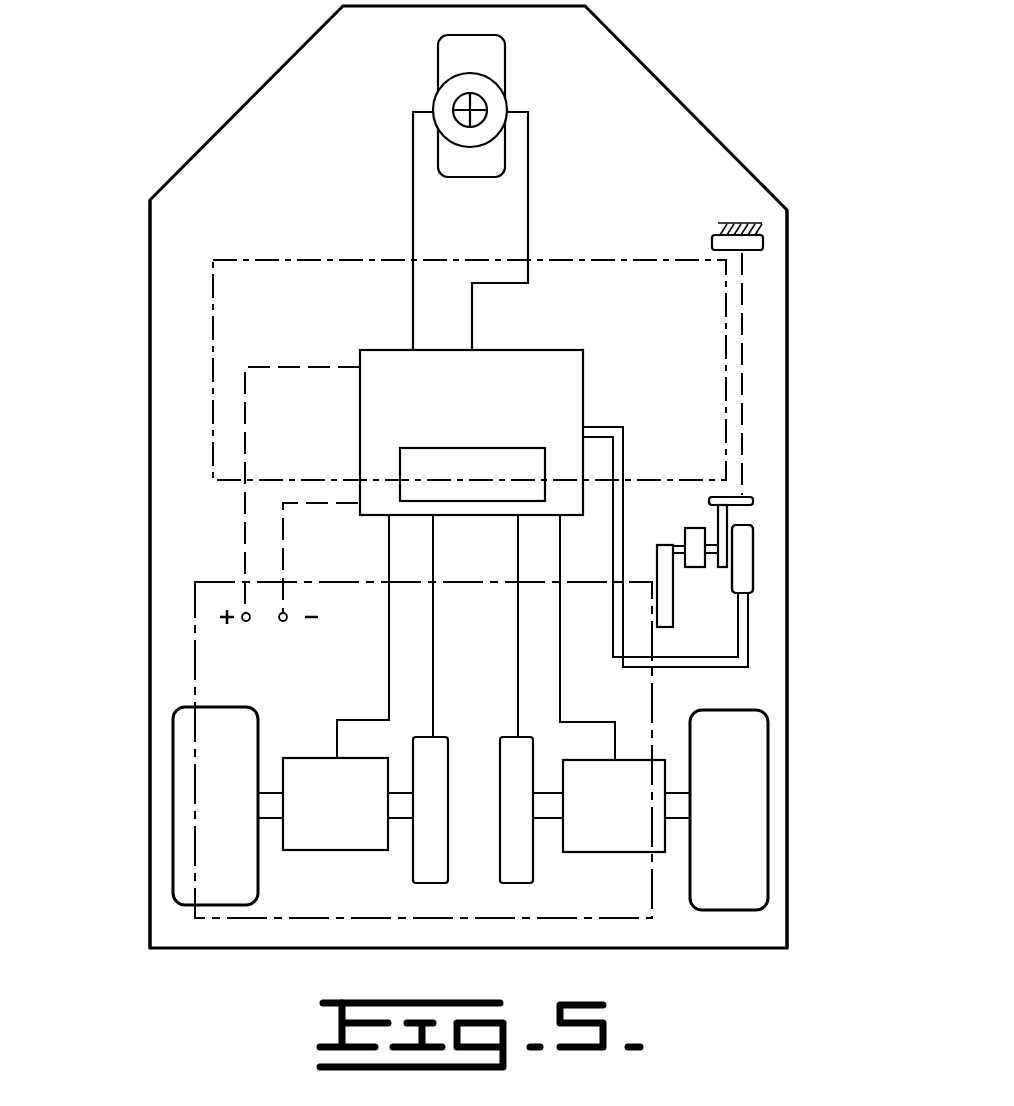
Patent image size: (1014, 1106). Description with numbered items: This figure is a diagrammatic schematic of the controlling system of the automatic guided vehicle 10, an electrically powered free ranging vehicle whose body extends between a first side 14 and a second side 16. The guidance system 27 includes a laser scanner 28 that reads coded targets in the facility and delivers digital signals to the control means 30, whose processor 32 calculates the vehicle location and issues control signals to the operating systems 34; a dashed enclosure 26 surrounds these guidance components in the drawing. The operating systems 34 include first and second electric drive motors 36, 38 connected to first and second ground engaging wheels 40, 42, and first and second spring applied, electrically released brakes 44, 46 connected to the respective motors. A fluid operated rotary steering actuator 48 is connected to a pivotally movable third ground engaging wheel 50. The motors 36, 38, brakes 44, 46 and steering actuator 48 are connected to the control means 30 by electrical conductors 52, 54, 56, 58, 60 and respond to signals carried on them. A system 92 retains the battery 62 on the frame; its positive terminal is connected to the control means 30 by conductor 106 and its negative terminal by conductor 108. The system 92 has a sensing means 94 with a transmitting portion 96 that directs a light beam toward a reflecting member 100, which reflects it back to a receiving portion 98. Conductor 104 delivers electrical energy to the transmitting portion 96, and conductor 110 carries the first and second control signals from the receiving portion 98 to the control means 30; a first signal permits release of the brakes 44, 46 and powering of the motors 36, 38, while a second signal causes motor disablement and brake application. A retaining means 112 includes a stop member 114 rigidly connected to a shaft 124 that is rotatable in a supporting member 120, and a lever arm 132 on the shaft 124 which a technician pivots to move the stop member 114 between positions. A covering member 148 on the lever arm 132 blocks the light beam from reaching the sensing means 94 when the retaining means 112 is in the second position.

The automatic guided vehicle 10 is at (774, 110).
The first side 14 is at (789, 372).
The second side 16 is at (150, 475).
The control housing 26 is at (213, 330).
The guidance system 27 is at (348, 126).
The laser scanner 28 is at (470, 110).
The control means 30 is at (585, 370).
The processor 32 is at (400, 470).
The operating systems 34 is at (131, 592).
The first electric drive motor 36 is at (313, 762).
The second electric drive motor 38 is at (638, 760).
The first ground engaging wheel 40 is at (173, 790).
The second ground engaging wheel 42 is at (768, 828).
The first brake 44 is at (415, 860).
The second brake 46 is at (532, 872).
The rotary steering actuator 48 is at (452, 78).
The third ground engaging wheel 50 is at (507, 56).
The electrical conductor 52 is at (389, 638).
The electrical conductor 54 is at (562, 697).
The electrical conductor 56 is at (434, 682).
The electrical conductor 58 is at (518, 692).
The electrical conductor 60 is at (529, 197).
The battery 62 is at (195, 622).
The system 92 is at (835, 654).
The sensing means 94 is at (769, 593).
The transmitting portion 96 is at (753, 568).
The receiving portion 98 is at (742, 559).
The reflecting member 100 is at (764, 243).
The conductor 104 is at (627, 450).
The conductor 106 is at (360, 367).
The conductor 108 is at (286, 562).
The conductor 110 is at (618, 500).
The retaining means 112 is at (757, 480).
The stop member 114 is at (673, 615).
The supporting member 120 is at (685, 534).
The shaft 124 is at (657, 563).
The lever arm 132 is at (728, 516).
The covering member 148 is at (753, 500).